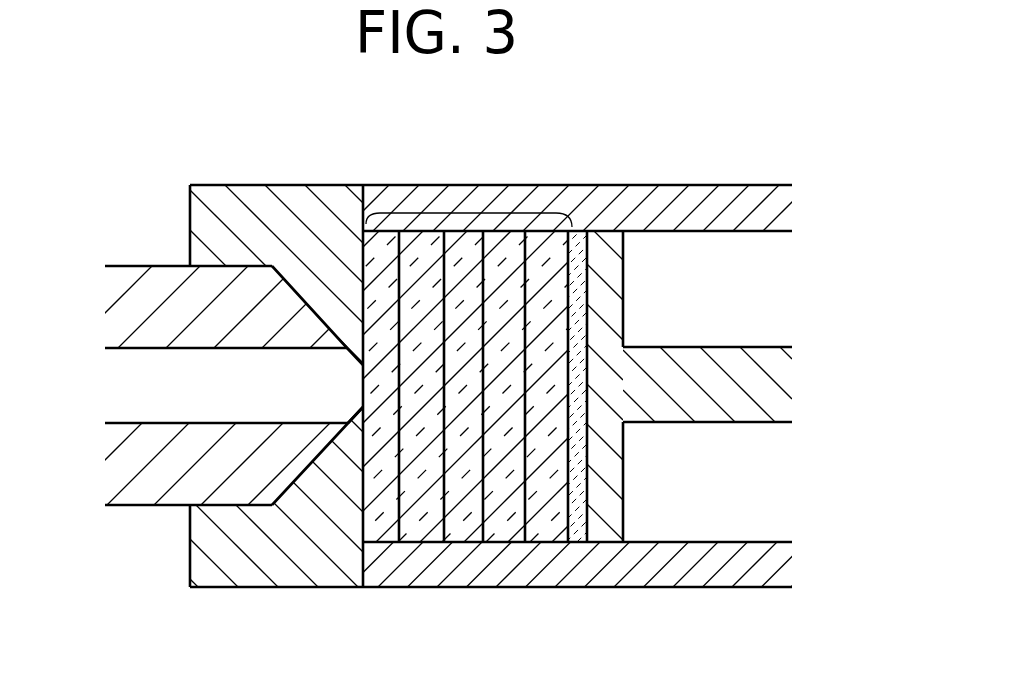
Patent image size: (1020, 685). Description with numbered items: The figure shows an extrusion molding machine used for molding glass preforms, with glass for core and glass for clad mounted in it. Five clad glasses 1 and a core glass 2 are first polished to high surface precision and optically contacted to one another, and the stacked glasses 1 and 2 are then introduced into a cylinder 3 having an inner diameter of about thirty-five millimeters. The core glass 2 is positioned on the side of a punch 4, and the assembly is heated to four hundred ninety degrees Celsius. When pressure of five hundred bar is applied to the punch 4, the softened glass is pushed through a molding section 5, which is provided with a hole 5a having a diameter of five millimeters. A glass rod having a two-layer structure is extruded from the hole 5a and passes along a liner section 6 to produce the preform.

The clad glasses 1 is at (470, 213).
The core glass 2 is at (570, 233).
The cylinder 3 is at (682, 556).
The punch 4 is at (615, 240).
The molding section 5 is at (270, 218).
The hole 5a is at (355, 384).
The liner section 6 is at (143, 303).